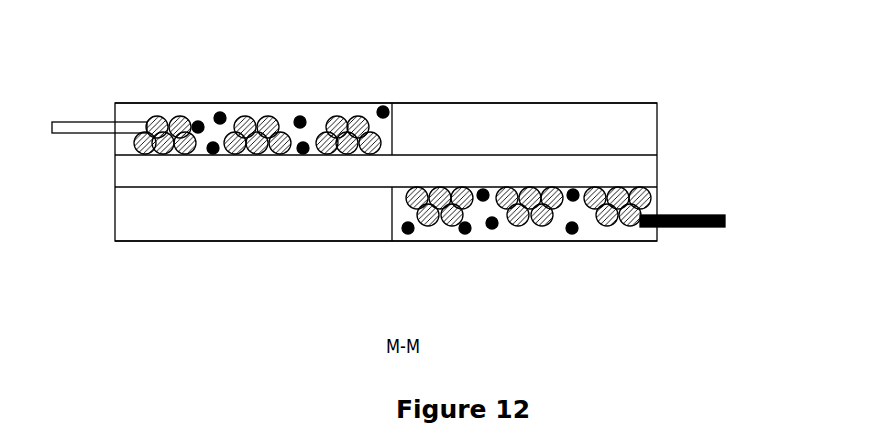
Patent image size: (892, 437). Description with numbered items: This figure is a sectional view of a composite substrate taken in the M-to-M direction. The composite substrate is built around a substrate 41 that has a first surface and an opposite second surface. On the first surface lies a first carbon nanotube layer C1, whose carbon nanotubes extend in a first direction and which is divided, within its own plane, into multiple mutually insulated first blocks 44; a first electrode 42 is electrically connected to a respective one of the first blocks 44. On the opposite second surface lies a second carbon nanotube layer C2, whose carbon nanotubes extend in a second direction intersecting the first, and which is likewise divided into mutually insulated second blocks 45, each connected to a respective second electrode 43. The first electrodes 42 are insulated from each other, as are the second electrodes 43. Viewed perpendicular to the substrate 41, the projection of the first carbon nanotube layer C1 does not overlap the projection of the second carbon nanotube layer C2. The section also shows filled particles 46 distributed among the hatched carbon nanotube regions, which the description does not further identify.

The substrate 41 is at (573, 168).
The first electrodes 42 is at (78, 120).
The second electrodes 43 is at (683, 215).
The first blocks 44 is at (318, 104).
The second blocks 45 is at (457, 241).
The conductive particles 46 is at (225, 117).
The first carbon nanotube layer C1 is at (165, 120).
The second carbon nanotube layer C2 is at (603, 213).